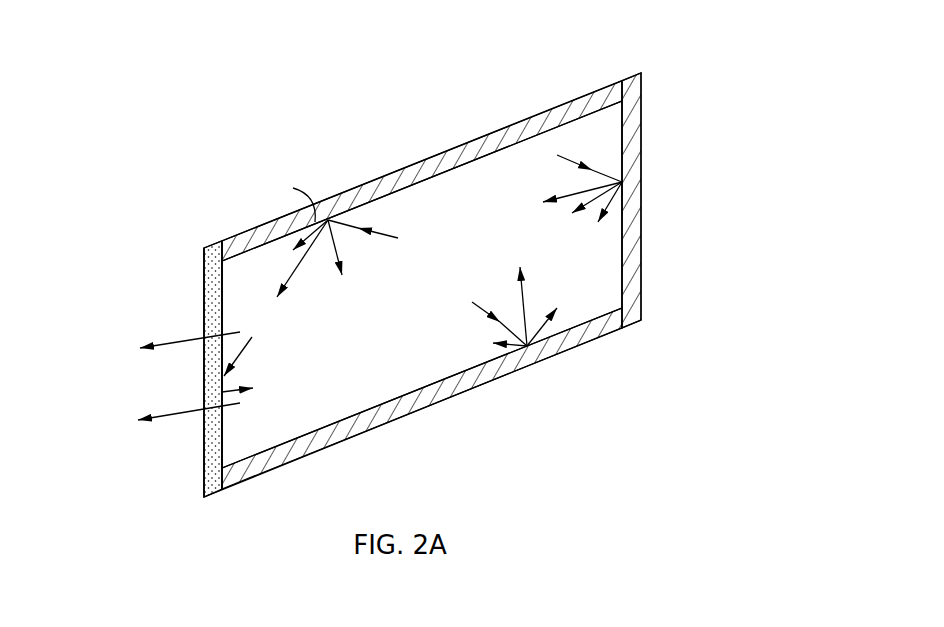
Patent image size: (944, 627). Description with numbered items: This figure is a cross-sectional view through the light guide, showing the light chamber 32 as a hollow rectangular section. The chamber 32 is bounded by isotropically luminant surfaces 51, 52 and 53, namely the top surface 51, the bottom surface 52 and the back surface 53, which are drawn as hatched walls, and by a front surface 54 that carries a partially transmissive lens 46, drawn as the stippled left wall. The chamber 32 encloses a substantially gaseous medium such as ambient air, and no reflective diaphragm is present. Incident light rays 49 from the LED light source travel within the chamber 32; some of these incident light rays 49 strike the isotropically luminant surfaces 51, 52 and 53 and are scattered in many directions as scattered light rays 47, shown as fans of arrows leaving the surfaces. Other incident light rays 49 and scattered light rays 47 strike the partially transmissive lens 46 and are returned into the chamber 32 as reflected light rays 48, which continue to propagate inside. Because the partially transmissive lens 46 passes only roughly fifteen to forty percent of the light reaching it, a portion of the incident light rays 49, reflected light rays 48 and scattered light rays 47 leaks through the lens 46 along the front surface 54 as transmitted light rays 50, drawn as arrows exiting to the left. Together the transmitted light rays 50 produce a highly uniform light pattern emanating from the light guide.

The light chamber 32 is at (600, 87).
The partially transmissive lens 46 is at (202, 457).
The scattered light rays 47 is at (293, 268).
The reflected light rays 48 is at (222, 393).
The incident light rays 49 is at (382, 233).
The transmitted light rays 50 is at (174, 418).
The isotropically luminant surface (top) 51 is at (472, 158).
The isotropically luminant surface (bottom) 52 is at (418, 384).
The isotropically luminant surface (back) 53 is at (626, 270).
The front surface 54 is at (224, 300).